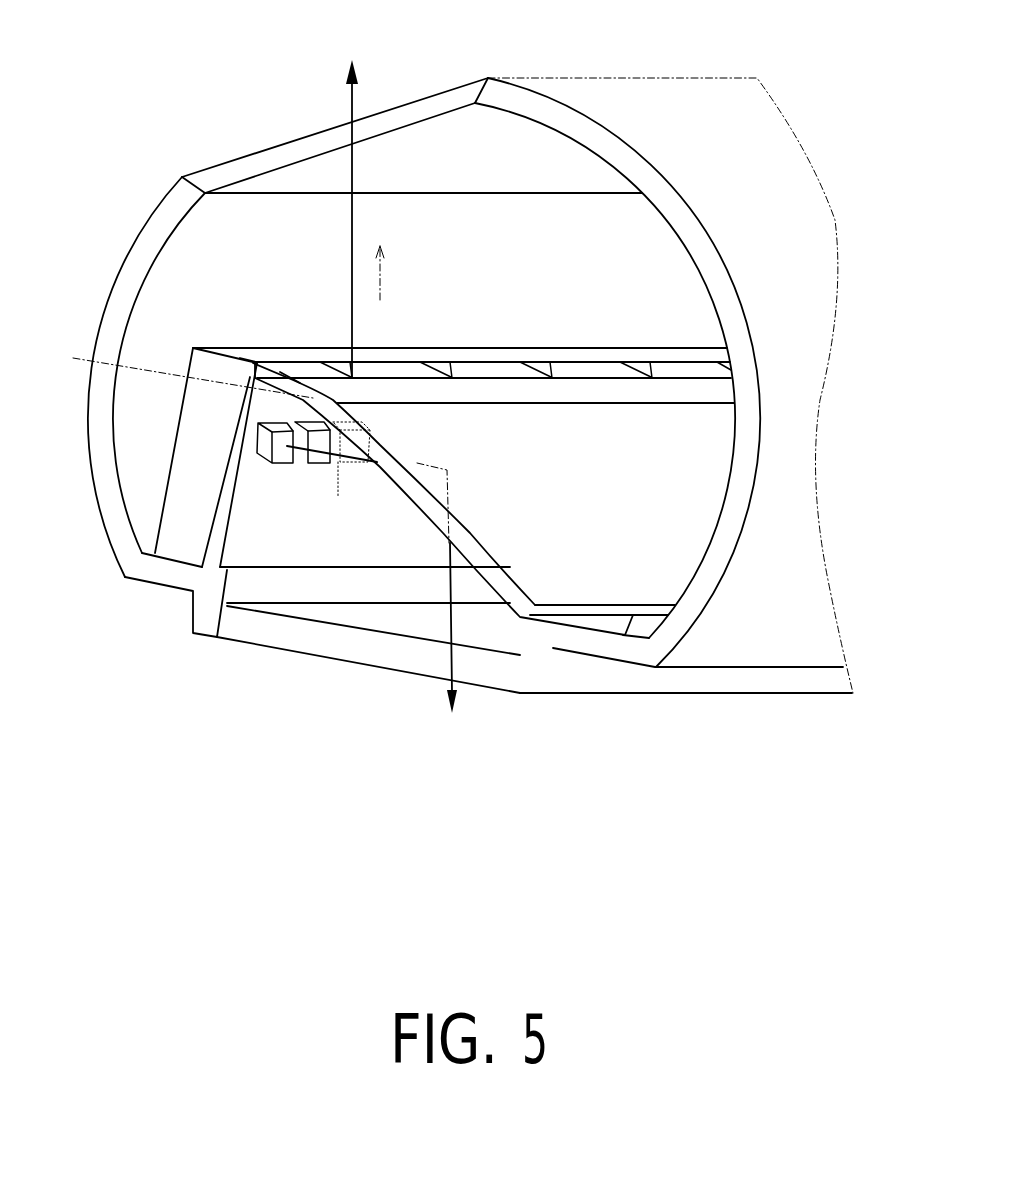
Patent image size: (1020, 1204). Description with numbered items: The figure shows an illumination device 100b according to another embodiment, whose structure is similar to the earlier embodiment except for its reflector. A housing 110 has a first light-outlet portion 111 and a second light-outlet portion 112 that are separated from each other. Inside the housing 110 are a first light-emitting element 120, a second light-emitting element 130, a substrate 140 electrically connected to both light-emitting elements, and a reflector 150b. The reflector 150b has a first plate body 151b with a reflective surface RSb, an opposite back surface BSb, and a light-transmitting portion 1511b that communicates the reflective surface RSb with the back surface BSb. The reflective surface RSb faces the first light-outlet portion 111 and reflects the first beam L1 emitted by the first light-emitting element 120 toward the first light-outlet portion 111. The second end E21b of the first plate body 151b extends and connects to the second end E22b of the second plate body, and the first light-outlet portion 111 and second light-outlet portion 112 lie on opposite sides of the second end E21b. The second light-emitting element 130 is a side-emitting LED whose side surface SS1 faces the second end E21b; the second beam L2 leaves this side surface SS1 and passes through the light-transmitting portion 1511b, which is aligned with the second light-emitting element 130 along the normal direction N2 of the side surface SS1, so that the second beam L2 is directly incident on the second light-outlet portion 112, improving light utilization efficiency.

The illumination device 100b is at (130, 32).
The housing 110 is at (793, 530).
The first light-outlet portion 111 is at (332, 643).
The second light-outlet portion 112 is at (273, 155).
The first light-emitting element 120 is at (267, 444).
The second light-emitting element 130 is at (337, 497).
The substrate 140 is at (222, 515).
The reflector 150b is at (450, 478).
The first plate body 151b is at (407, 478).
The light-transmitting portion 1511b is at (340, 366).
The second end of the first plate body E21b is at (290, 373).
The second end of the second plate body E22b is at (246, 362).
The side surface SS1 is at (170, 373).
The reflective surface RSb is at (430, 513).
The back surface BSb is at (556, 549).
The normal direction N2 is at (384, 275).
The first beam L1 is at (457, 627).
The second beam L2 is at (353, 103).